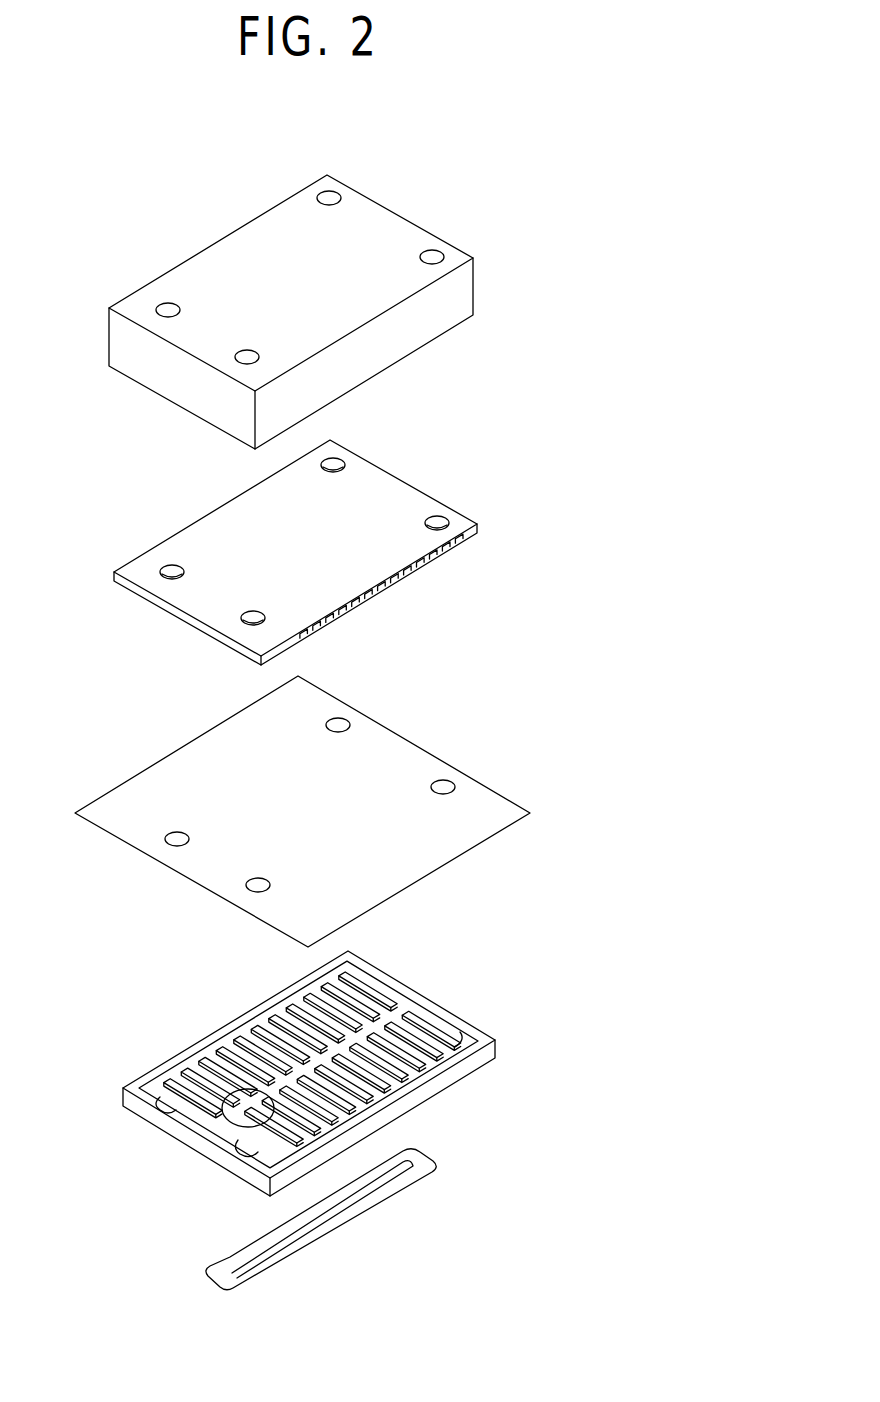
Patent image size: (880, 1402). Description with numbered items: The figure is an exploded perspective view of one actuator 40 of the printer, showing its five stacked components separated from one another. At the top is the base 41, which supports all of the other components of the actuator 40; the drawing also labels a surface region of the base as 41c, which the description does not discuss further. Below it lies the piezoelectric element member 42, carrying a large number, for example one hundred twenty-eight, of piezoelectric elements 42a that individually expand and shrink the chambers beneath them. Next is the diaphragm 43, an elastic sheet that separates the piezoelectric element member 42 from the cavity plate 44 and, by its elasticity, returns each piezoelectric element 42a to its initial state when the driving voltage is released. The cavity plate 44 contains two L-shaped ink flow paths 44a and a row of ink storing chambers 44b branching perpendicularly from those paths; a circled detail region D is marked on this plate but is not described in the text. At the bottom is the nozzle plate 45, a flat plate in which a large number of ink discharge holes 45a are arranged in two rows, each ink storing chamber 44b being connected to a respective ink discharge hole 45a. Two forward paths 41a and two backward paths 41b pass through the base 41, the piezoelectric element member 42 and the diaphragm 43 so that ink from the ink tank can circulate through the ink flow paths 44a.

The actuator 40 is at (562, 351).
The base 41 is at (149, 414).
The forward paths 41a is at (244, 350).
The backward paths 41b is at (424, 252).
The top surface of cover plate 41c is at (407, 285).
The piezoelectric element member 42 is at (152, 580).
The piezoelectric elements 42a is at (398, 585).
The diaphragm 43 is at (156, 842).
The cavity plate 44 is at (184, 1053).
The ink flow paths 44a is at (456, 1046).
The ink storing chambers 44b is at (382, 997).
The nozzle plate 45 is at (226, 1259).
The ink discharge holes 45a is at (405, 1150).
The diameter / circular region D is at (221, 1122).